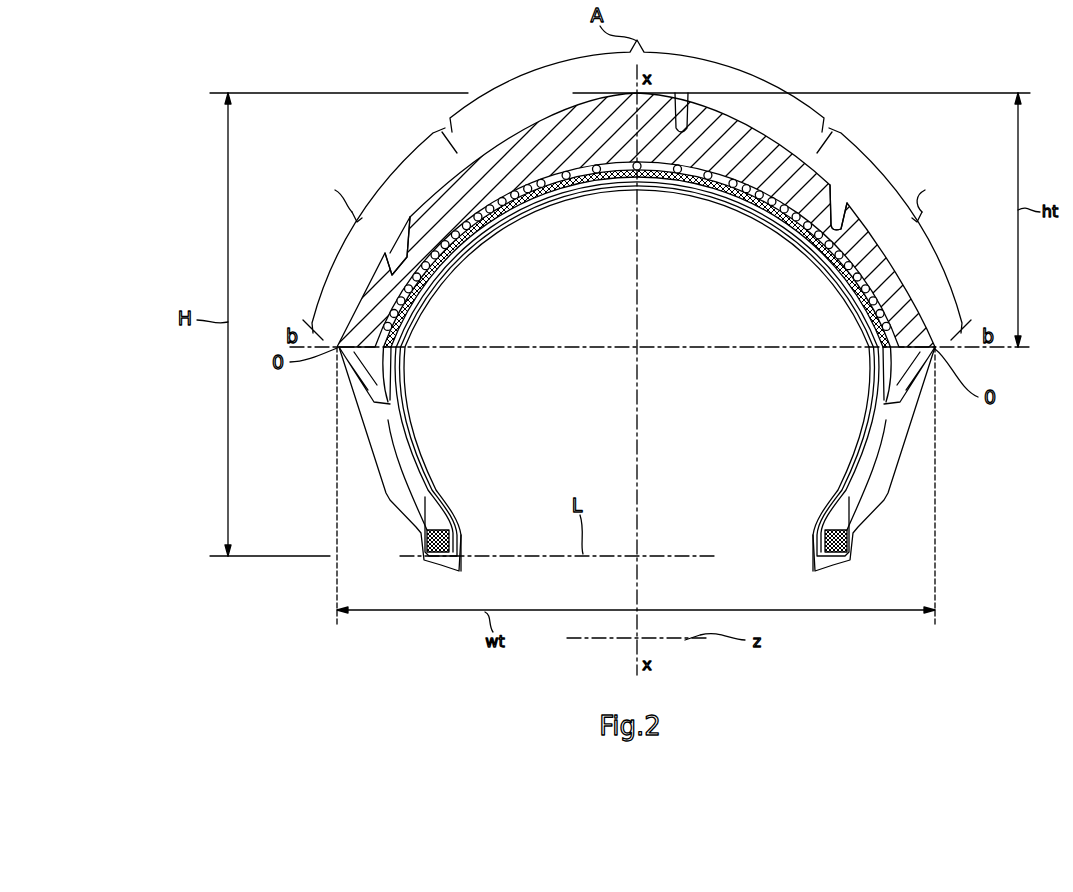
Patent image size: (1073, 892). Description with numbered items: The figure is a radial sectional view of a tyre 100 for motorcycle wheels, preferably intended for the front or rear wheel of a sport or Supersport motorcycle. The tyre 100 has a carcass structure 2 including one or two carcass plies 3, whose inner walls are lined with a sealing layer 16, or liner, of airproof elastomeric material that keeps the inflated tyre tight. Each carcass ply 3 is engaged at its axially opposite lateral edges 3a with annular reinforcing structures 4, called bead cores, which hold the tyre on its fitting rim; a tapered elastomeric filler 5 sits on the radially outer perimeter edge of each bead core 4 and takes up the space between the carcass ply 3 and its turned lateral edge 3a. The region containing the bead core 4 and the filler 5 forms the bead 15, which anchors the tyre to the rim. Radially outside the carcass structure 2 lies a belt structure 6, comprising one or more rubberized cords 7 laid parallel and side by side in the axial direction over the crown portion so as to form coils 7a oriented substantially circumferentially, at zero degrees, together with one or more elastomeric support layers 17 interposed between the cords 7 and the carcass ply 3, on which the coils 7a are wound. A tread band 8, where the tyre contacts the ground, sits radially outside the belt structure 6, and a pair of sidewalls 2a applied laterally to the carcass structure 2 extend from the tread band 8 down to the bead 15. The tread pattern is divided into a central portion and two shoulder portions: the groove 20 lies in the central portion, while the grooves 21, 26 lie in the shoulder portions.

The tyre 100 is at (503, 104).
The carcass structure 2 is at (398, 405).
The sidewalls 2a is at (375, 447).
The carcass ply 3 is at (803, 257).
The lateral edge of carcass ply 3a is at (395, 493).
The annular reinforcing structure 4 is at (425, 540).
The tapered elastomeric filler 5 is at (440, 490).
The belt structure 6 is at (362, 383).
The rubberized cord 7 is at (596, 164).
The coils 7a is at (727, 207).
The tread band 8 is at (905, 210).
The bead 15 is at (468, 530).
The sealing layer 16 is at (678, 192).
The support layer 17 is at (568, 197).
The groove 20 is at (683, 104).
The groove 21 is at (399, 244).
The groove 26 is at (835, 201).